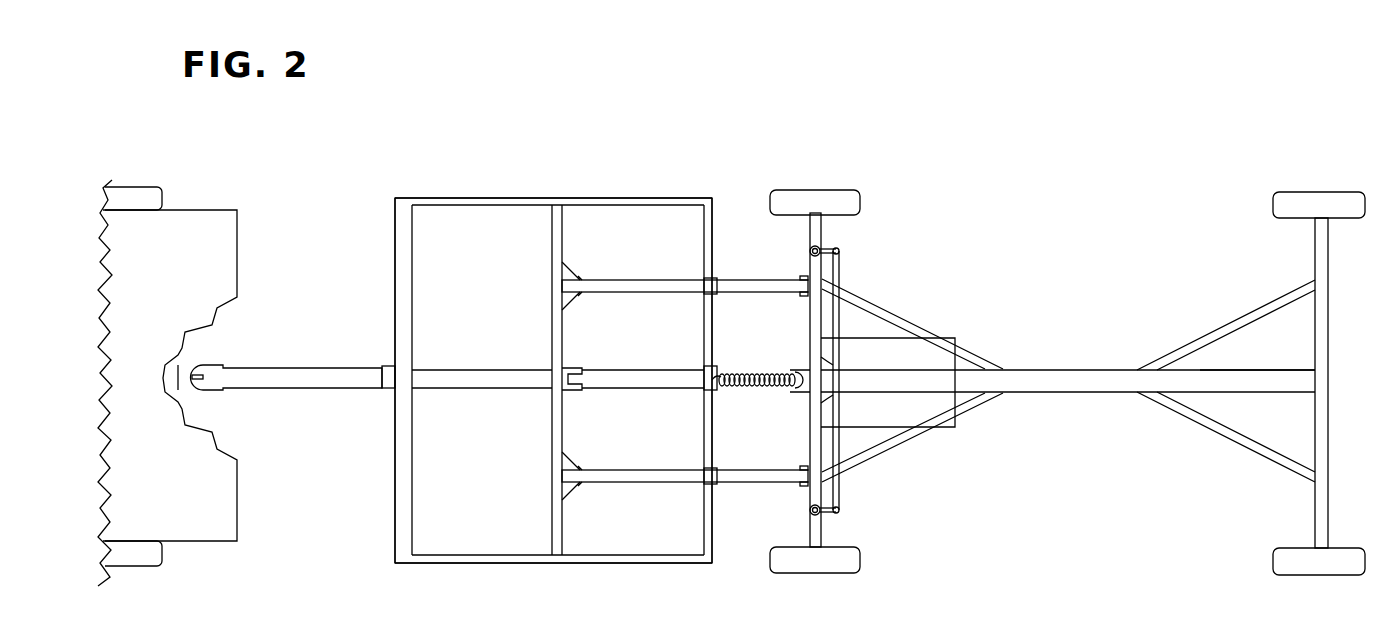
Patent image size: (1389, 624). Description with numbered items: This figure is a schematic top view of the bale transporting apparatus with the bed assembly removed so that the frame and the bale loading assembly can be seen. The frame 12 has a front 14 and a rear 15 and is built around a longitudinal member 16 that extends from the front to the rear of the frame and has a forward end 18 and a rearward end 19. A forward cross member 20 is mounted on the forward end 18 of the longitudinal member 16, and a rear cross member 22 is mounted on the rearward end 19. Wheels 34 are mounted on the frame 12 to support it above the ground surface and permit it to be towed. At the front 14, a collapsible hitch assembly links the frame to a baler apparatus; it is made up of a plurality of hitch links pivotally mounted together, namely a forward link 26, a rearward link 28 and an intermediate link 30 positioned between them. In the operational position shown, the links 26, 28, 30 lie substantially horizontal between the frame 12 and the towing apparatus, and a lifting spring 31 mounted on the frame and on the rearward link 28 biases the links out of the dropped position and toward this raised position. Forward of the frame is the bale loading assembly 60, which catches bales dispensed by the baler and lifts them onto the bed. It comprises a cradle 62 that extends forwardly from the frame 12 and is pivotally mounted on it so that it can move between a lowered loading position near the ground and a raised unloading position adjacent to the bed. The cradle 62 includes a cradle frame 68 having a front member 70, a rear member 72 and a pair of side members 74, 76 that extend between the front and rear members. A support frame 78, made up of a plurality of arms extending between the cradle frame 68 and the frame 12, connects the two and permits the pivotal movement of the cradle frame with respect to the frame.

The frame 12 is at (1100, 381).
The front 14 is at (886, 356).
The rear 15 is at (1251, 383).
The longitudinal member 16 is at (1022, 381).
The forward end 18 is at (826, 365).
The rearward end 19 is at (1285, 383).
The forward cross member 20 is at (818, 530).
The rear cross member 22 is at (1318, 517).
The forward link 26 is at (270, 372).
The rearward link 28 is at (641, 380).
The intermediate link 30 is at (424, 377).
The lifting spring 31 is at (732, 373).
The wheels 34 is at (813, 197).
The bale loading assembly 60 is at (531, 329).
The cradle 62 is at (514, 197).
The cradle frame 68 is at (397, 512).
The front member 70 is at (397, 229).
The rear member 72 is at (705, 240).
The side member 74 is at (448, 553).
The side member 76 is at (430, 197).
The support frame 78 is at (662, 472).